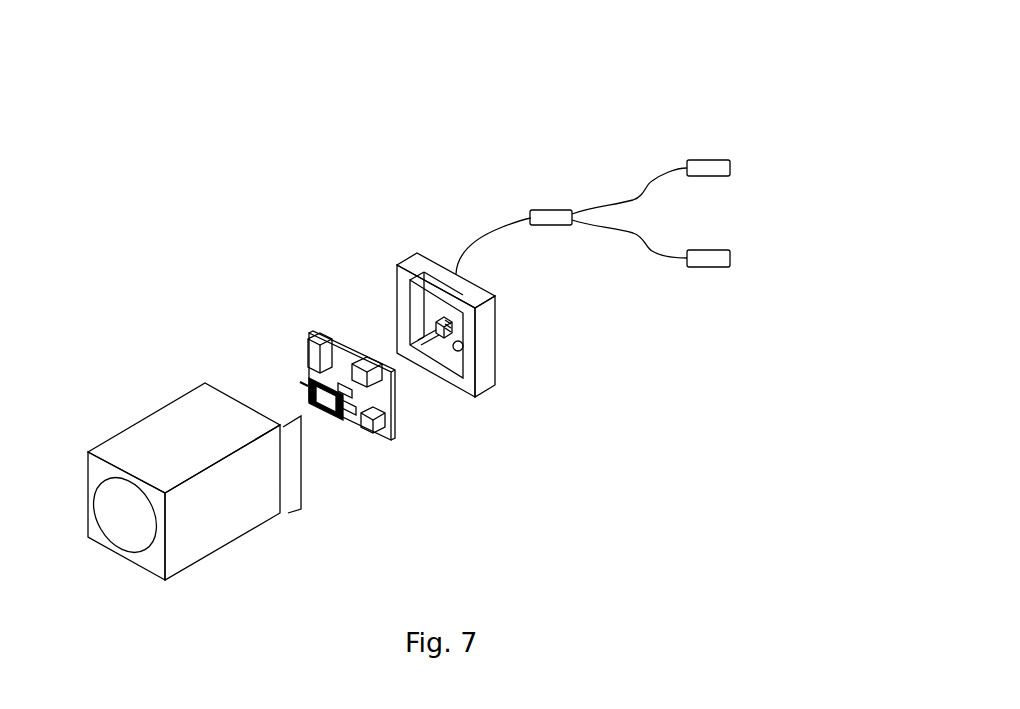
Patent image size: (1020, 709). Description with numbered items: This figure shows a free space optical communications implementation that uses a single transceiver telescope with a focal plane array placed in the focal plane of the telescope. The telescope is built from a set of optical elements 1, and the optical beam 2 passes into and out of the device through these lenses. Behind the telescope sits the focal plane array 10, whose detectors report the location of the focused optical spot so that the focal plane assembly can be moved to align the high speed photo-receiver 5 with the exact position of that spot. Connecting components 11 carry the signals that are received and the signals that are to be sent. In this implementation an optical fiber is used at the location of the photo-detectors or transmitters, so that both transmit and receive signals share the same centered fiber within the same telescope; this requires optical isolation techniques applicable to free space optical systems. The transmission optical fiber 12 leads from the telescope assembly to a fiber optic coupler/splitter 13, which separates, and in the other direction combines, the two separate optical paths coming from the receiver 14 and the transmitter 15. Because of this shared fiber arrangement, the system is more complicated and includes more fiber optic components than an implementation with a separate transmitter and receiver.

The optical elements 1 is at (108, 480).
The beam 2 is at (142, 500).
The high speed photo-receiver 5 is at (409, 361).
The focal plane array 10 is at (334, 425).
The connecting components 11 is at (447, 346).
The transmission optical fiber 12 is at (488, 240).
The fiber optic coupler/splitter 13 is at (538, 204).
The receiver 14 is at (708, 163).
The transmitter 15 is at (725, 257).